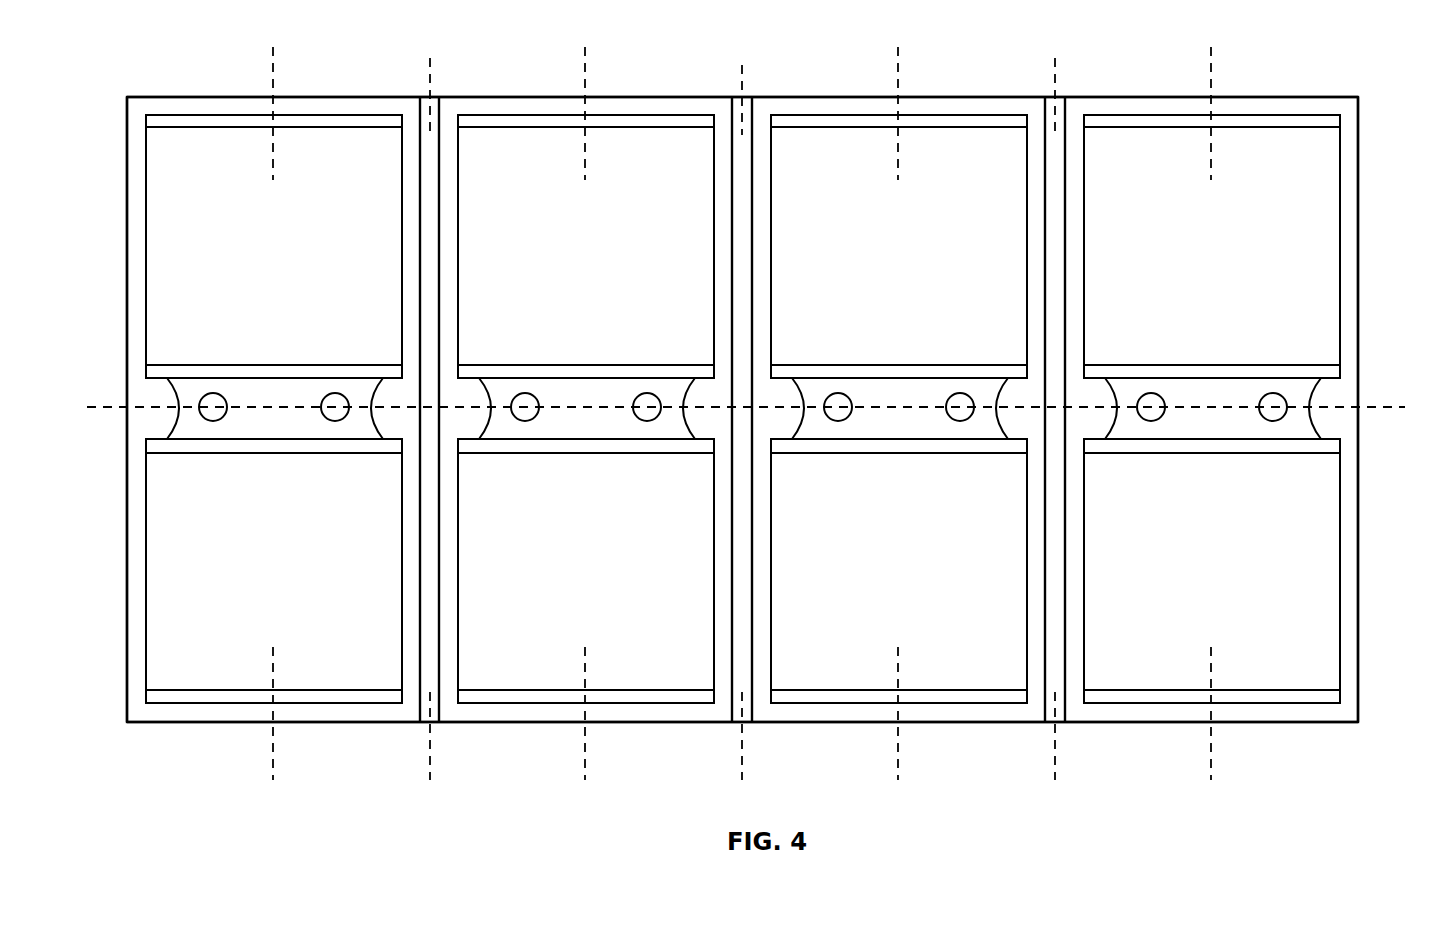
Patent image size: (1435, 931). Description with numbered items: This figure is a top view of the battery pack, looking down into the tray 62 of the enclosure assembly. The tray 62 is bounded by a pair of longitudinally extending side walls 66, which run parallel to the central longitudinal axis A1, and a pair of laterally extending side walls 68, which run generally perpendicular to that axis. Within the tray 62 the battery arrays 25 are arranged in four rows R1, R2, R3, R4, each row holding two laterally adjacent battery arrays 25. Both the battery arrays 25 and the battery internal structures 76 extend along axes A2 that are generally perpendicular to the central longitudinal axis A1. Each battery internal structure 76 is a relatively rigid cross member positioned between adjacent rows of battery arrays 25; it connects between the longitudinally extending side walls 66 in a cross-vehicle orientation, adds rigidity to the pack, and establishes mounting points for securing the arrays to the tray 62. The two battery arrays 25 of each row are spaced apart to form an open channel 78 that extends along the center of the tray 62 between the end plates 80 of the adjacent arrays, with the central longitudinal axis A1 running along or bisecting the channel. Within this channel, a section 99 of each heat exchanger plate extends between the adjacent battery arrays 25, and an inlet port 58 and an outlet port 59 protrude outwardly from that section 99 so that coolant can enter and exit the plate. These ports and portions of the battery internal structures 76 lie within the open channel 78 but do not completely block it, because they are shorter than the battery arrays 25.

The tray 62 is at (122, 92).
The longitudinally extending side walls 66 is at (637, 96).
The laterally extending side walls 68 is at (126, 630).
The battery internal structure 76 is at (427, 723).
The battery array 25 is at (260, 257).
The end plates 80 is at (263, 372).
The inlet port 58 is at (213, 394).
The outlet port 59 is at (335, 394).
The section of the heat exchanger plate 99 is at (278, 430).
The open channel 78 is at (392, 414).
The central longitudinal axis A1 is at (110, 406).
The axes A2 is at (271, 80).
The row R1 is at (188, 88).
The row R2 is at (507, 88).
The row R3 is at (822, 88).
The row R4 is at (1136, 88).